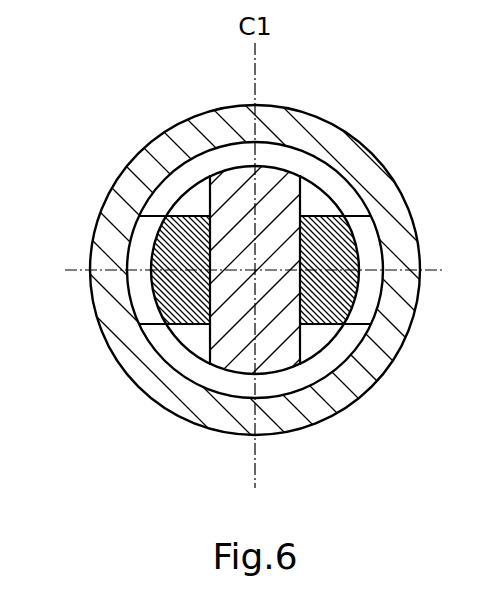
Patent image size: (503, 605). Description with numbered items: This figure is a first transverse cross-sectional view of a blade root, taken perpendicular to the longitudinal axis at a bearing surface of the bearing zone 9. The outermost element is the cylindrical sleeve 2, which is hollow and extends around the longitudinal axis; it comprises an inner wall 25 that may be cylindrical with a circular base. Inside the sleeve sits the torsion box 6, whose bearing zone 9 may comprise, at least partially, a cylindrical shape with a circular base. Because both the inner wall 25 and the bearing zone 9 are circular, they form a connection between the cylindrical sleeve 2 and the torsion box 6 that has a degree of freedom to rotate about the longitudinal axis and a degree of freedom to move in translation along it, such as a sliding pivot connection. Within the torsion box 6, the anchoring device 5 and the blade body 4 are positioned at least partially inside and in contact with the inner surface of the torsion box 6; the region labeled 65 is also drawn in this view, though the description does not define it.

The cylindrical sleeve 2 is at (188, 132).
The bearing zone 9 is at (273, 142).
The blade body 4 is at (285, 185).
The recess 65 is at (313, 190).
The inner wall 25 is at (168, 170).
The torsion box 6 is at (368, 242).
The anchoring device 5 is at (172, 298).